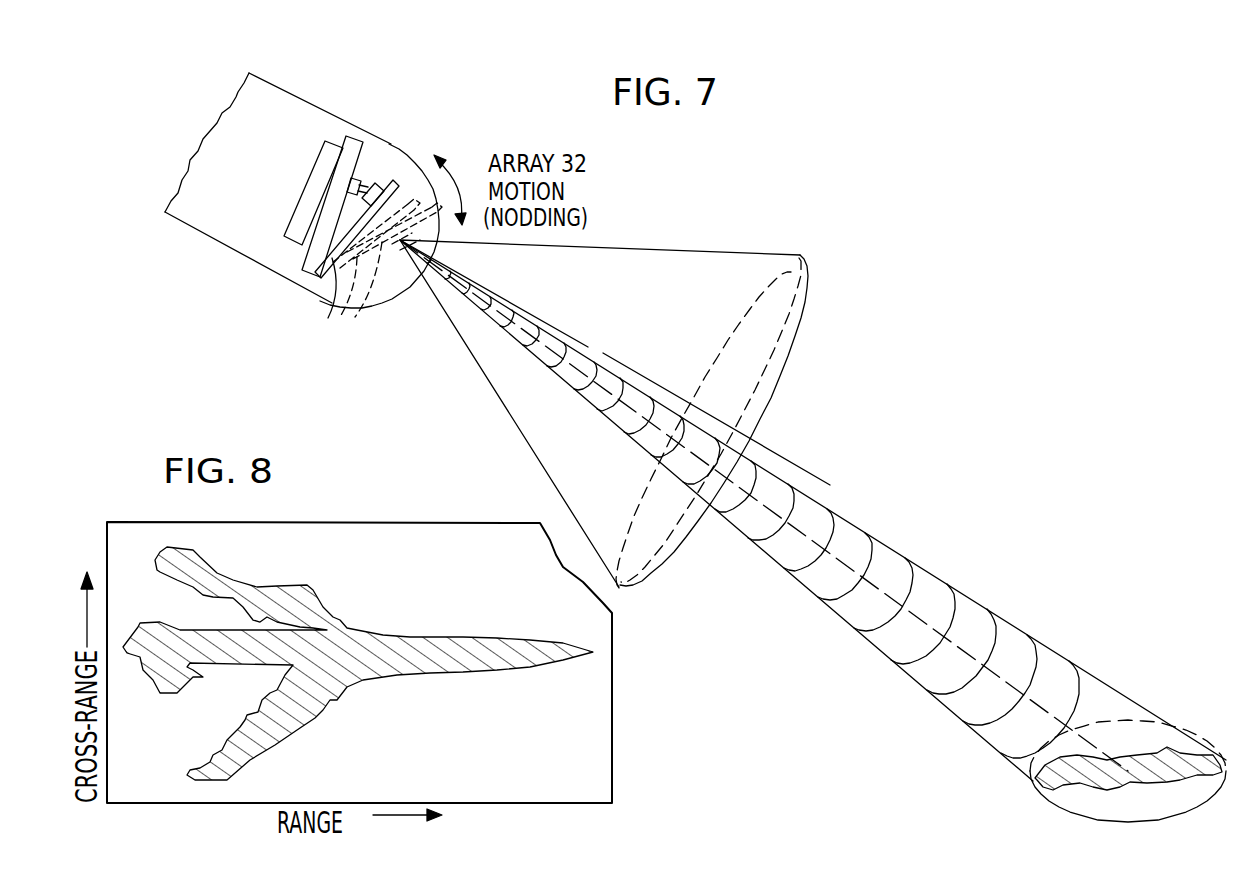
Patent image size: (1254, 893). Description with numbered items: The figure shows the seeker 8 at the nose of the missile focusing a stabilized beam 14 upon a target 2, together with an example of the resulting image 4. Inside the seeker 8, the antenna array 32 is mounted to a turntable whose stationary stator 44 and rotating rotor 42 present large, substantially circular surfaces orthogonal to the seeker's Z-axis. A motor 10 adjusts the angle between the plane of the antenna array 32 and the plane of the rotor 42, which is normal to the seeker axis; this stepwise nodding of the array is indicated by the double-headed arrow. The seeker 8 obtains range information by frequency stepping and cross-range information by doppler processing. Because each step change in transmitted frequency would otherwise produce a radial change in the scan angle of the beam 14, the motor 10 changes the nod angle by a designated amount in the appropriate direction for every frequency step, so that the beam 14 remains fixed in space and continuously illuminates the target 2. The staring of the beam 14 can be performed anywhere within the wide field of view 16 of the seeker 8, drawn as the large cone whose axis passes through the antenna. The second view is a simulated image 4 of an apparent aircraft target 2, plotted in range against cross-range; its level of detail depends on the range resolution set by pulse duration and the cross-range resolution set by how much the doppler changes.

In FIG. 7, the seeker 8 is at (321, 110).
In FIG. 7, the motor 10 is at (362, 178).
In FIG. 7, the stator 44 is at (327, 141).
In FIG. 7, the rotor 42 is at (363, 141).
In FIG. 7, the antenna array 32 is at (378, 266).
In FIG. 7, the FOV 16 is at (795, 320).
In FIG. 7, the beam 14 is at (973, 593).
In FIG. 7, the target 2 is at (1172, 755).
In FIG. 8, the image 4 is at (410, 637).